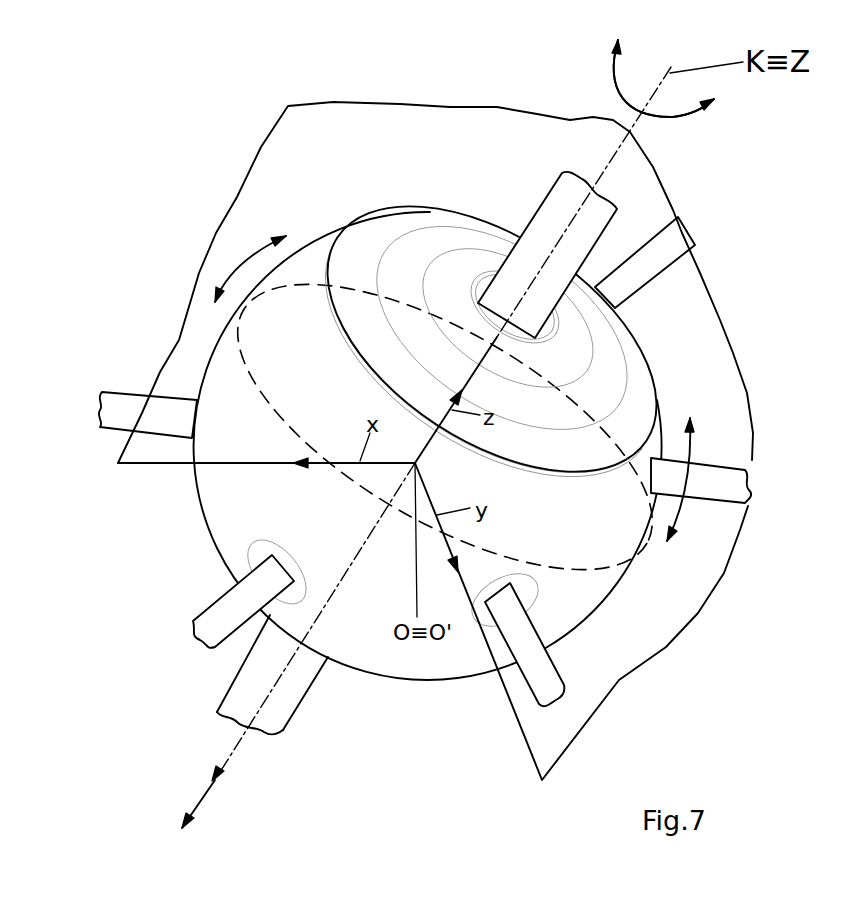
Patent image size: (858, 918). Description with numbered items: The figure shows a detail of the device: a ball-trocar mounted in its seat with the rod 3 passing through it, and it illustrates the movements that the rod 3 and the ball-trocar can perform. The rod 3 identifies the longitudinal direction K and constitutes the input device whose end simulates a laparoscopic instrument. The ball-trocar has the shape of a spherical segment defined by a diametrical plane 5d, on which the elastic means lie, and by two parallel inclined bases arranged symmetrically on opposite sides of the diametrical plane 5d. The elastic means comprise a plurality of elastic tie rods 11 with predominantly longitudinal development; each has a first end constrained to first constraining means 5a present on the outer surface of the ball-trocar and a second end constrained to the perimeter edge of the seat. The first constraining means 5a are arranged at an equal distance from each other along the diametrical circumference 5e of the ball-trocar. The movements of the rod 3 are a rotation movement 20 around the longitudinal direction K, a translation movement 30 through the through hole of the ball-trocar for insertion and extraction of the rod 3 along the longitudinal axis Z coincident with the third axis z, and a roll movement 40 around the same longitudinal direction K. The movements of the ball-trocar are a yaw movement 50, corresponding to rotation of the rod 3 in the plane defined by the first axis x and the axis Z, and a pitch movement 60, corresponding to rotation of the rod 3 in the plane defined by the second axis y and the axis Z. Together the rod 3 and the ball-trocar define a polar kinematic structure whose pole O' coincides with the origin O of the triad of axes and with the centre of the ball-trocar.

The rod 3 is at (310, 717).
The first constraining means 5a is at (260, 553).
The diametrical plane 5d is at (309, 398).
The diametrical circumference 5e is at (405, 520).
The elastic tie rods 11 is at (130, 405).
The rotation movement 20 is at (673, 117).
The roll movement 40 is at (673, 117).
The translation movement 30 is at (197, 803).
The yaw movement 50 is at (247, 257).
The pitch movement 60 is at (692, 457).